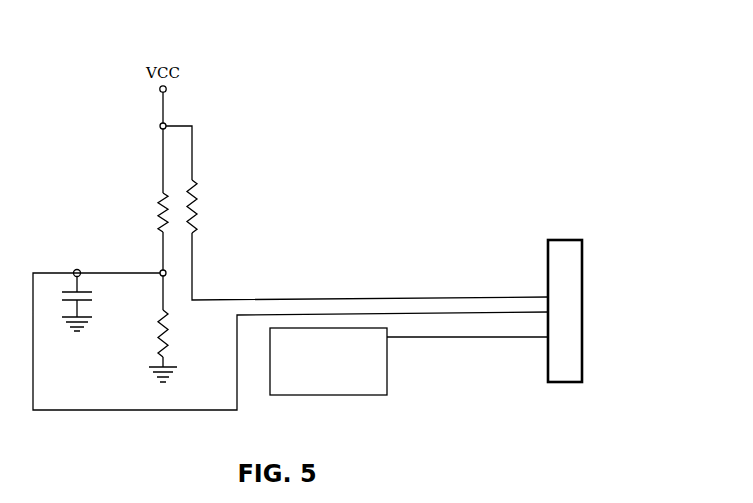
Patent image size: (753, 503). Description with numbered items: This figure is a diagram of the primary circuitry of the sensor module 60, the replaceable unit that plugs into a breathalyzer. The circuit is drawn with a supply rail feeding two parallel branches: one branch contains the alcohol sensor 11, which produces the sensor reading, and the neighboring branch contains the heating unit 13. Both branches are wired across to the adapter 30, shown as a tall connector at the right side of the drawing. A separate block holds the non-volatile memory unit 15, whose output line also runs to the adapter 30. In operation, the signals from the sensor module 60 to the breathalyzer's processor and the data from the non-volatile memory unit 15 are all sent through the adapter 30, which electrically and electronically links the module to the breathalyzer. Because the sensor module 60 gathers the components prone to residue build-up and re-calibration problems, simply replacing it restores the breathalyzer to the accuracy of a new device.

The alcohol sensor 11 is at (160, 210).
The heating unit 13 is at (200, 203).
The non-volatile memory unit 15 is at (409, 361).
The adapter 30 is at (558, 338).
The sensor module 60 is at (386, 230).